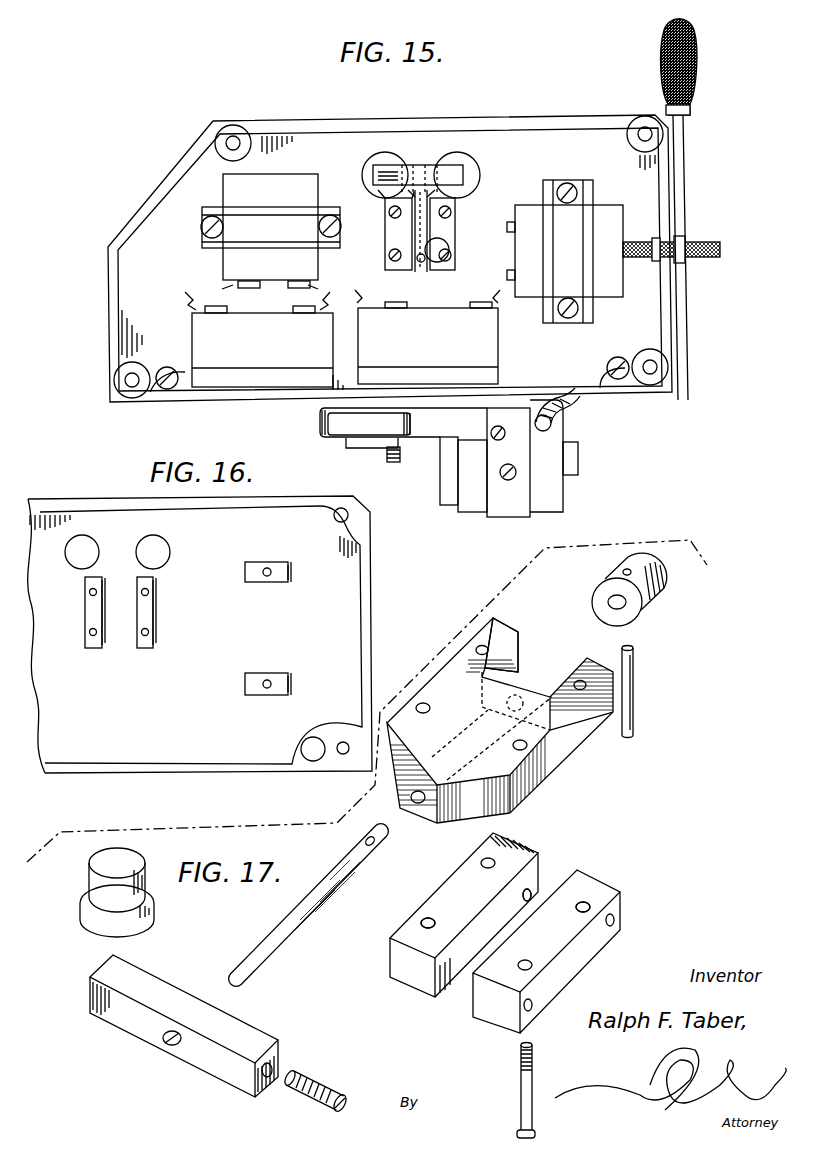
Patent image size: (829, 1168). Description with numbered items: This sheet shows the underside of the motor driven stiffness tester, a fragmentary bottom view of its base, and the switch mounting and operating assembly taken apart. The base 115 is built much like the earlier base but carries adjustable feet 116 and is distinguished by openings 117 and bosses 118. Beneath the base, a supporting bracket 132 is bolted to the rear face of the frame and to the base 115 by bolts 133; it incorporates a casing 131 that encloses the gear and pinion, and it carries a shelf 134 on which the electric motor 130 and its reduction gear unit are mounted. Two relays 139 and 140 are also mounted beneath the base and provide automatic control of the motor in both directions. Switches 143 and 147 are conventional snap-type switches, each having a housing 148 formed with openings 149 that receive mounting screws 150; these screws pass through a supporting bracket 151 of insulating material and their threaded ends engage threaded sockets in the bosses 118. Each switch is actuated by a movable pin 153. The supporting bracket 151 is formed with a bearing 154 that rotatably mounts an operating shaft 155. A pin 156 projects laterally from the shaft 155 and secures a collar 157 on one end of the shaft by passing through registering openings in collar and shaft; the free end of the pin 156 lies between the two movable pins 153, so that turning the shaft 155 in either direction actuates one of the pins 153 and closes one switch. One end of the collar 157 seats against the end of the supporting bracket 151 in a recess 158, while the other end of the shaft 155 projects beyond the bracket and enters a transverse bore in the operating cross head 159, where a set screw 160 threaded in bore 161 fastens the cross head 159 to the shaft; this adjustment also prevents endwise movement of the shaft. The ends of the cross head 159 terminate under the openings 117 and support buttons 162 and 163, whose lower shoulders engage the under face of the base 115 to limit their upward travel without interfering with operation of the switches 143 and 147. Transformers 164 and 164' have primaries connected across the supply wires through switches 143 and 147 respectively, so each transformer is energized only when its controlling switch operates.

In FIG. 15, the base 115 is at (416, 122).
In FIG. 15, the adjustable feet 116 is at (240, 132).
In FIG. 16, the openings 117 is at (143, 541).
In FIG. 16, the bosses 118 is at (96, 650).
In FIG. 15, the electric motor 130 is at (563, 440).
In FIG. 15, the casing 131 is at (352, 447).
In FIG. 15, the supporting bracket 132 is at (321, 410).
In FIG. 15, the bolts 133 is at (395, 425).
In FIG. 15, the shelf 134 is at (510, 507).
In FIG. 15, the relay 139 is at (272, 318).
In FIG. 15, the relay 140 is at (445, 318).
In FIG. 15, the switch 143 is at (386, 228).
In FIG. 17, the switch 143 is at (391, 969).
In FIG. 15, the switch 147 is at (455, 232).
In FIG. 17, the switch 147 is at (582, 963).
In FIG. 17, the housing 148 is at (530, 855).
In FIG. 17, the openings 149 is at (420, 922).
In FIG. 15, the mounting screws 150 is at (389, 255).
In FIG. 17, the mounting screws 150 is at (533, 1075).
In FIG. 15, the supporting bracket 151 is at (452, 191).
In FIG. 17, the supporting bracket 151 is at (550, 763).
In FIG. 15, the movable pin 153 is at (420, 274).
In FIG. 17, the movable pin 153 is at (590, 870).
In FIG. 17, the bearing 154 is at (416, 804).
In FIG. 15, the operating shaft 155 is at (389, 210).
In FIG. 17, the operating shaft 155 is at (344, 878).
In FIG. 15, the pin 156 is at (455, 246).
In FIG. 17, the pin 156 is at (634, 674).
In FIG. 15, the collar 157 is at (402, 273).
In FIG. 17, the collar 157 is at (648, 606).
In FIG. 17, the recess 158 is at (515, 648).
In FIG. 15, the operating cross head 159 is at (409, 166).
In FIG. 17, the operating cross head 159 is at (262, 1042).
In FIG. 17, the set screw 160 is at (318, 1078).
In FIG. 17, the bore 161 is at (274, 1068).
In FIG. 15, the button 162 is at (377, 163).
In FIG. 17, the button 162 is at (100, 876).
In FIG. 15, the button 163 is at (470, 162).
In FIG. 15, the transformer 164 is at (613, 253).
In FIG. 15, the transformer 164' is at (260, 231).